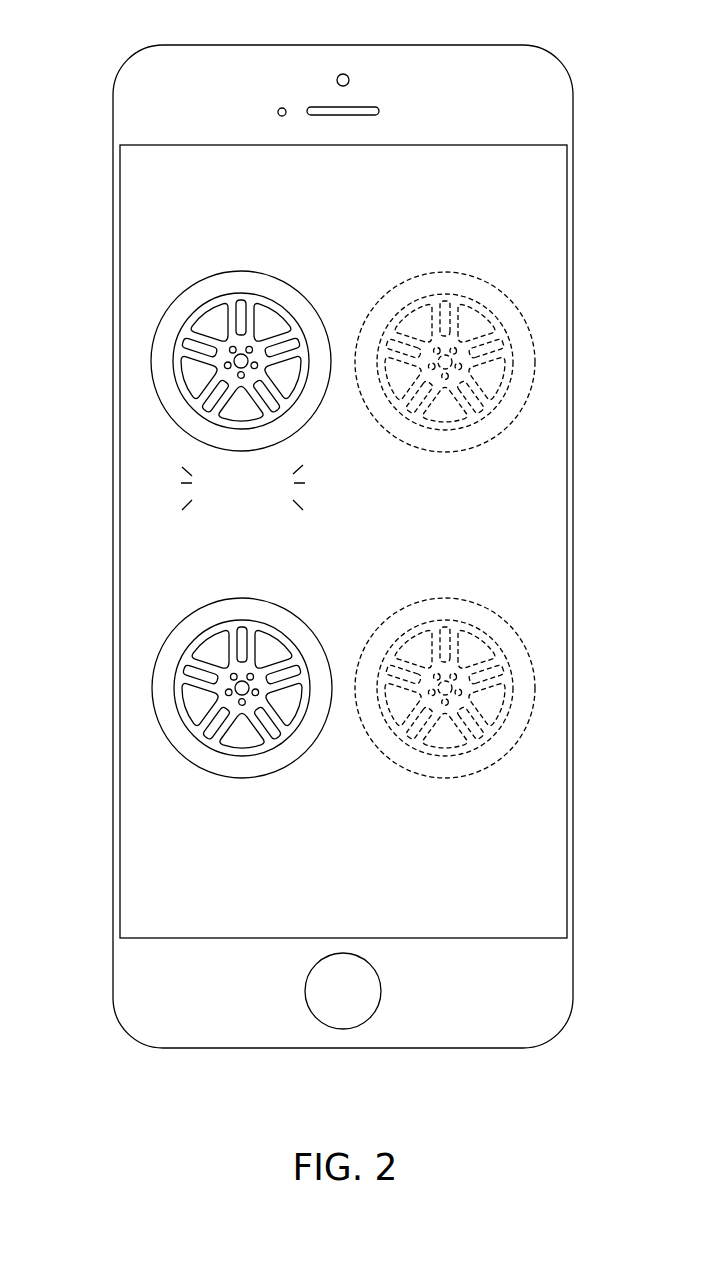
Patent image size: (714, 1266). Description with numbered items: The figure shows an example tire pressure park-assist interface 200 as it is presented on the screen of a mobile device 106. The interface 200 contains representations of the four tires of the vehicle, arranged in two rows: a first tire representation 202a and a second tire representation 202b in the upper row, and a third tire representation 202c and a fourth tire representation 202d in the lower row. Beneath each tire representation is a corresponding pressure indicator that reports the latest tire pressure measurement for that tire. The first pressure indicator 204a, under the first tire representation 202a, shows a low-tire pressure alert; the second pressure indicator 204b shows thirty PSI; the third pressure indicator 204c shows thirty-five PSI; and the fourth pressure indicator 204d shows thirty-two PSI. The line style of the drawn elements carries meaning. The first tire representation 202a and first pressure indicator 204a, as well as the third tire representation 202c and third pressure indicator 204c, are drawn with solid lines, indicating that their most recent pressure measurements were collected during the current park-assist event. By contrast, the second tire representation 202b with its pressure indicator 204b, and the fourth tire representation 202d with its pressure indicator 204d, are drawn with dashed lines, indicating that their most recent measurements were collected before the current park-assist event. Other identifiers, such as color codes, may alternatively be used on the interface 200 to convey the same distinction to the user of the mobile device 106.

The mobile device 106 is at (557, 60).
The interface 200 is at (523, 187).
The first tire representation 202a is at (163, 318).
The second tire representation 202b is at (523, 315).
The third tire representation 202c is at (163, 645).
The fourth tire representation 202d is at (525, 642).
The first pressure indicator 204a is at (172, 489).
The second pressure indicator 204b is at (513, 490).
The third pressure indicator 204c is at (172, 817).
The fourth pressure indicator 204d is at (515, 817).